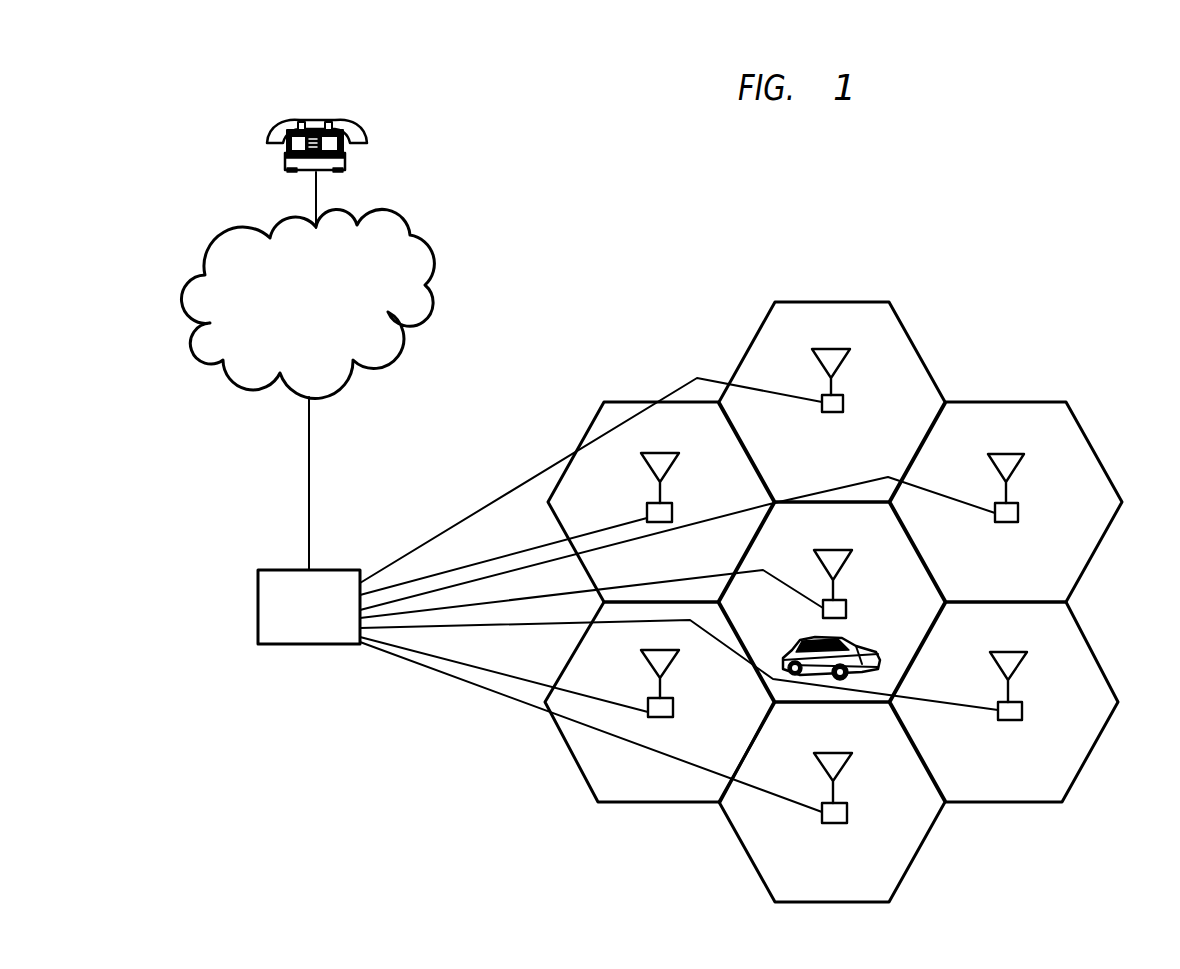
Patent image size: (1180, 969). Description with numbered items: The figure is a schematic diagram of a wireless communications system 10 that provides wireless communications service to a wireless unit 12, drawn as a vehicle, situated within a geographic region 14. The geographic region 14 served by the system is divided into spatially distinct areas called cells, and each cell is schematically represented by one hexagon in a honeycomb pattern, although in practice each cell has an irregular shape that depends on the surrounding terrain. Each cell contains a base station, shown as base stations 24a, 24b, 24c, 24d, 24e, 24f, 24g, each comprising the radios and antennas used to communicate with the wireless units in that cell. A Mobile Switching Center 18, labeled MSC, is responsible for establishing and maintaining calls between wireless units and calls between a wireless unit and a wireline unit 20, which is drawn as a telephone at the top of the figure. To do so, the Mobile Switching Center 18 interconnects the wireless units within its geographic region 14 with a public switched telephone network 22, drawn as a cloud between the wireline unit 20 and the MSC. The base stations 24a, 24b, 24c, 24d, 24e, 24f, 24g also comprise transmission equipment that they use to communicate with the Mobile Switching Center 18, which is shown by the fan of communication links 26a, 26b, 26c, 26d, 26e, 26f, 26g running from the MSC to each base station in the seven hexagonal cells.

The wireless communications system 10 is at (854, 246).
The wireless unit 12 is at (878, 657).
The geographic region 14 is at (1024, 361).
The Mobile Switching Center 18 is at (258, 607).
The wireline unit 20 is at (306, 117).
The public switched telephone network 22 is at (408, 218).
The base station 24a is at (847, 607).
The base station 24b is at (843, 398).
The base station 24c is at (672, 512).
The base station 24d is at (673, 711).
The base station 24e is at (847, 812).
The base station 24f is at (1022, 708).
The base station 24g is at (1018, 512).
The communication link 26a is at (790, 577).
The communication link 26b is at (787, 400).
The communication link 26c is at (603, 528).
The communication link 26d is at (611, 700).
The communication link 26e is at (790, 800).
The communication link 26f is at (955, 703).
The communication link 26g is at (957, 499).